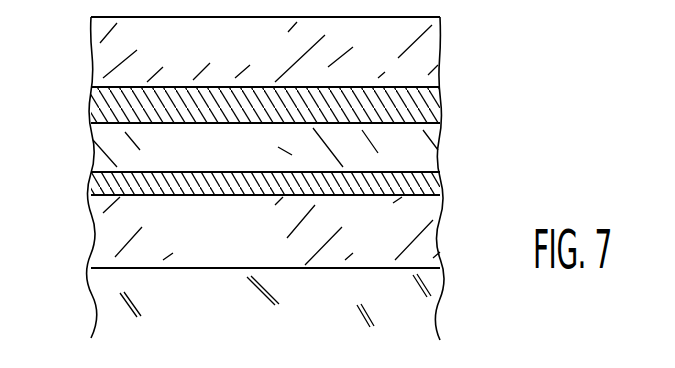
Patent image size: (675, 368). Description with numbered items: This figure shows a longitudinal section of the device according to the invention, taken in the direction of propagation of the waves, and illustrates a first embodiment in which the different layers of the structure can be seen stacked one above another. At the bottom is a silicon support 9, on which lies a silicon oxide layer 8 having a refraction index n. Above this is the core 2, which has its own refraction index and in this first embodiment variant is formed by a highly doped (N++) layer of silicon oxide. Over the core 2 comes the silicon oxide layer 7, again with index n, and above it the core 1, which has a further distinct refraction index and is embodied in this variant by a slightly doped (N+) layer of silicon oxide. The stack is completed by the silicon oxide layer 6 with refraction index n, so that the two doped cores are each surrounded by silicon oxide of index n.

The silicon oxide layer 6 is at (102, 53).
The core 1 is at (101, 100).
The silicon oxide layer 7 is at (100, 151).
The core 2 is at (100, 185).
The silicon oxide layer 8 is at (102, 243).
The silicon support 9 is at (108, 297).